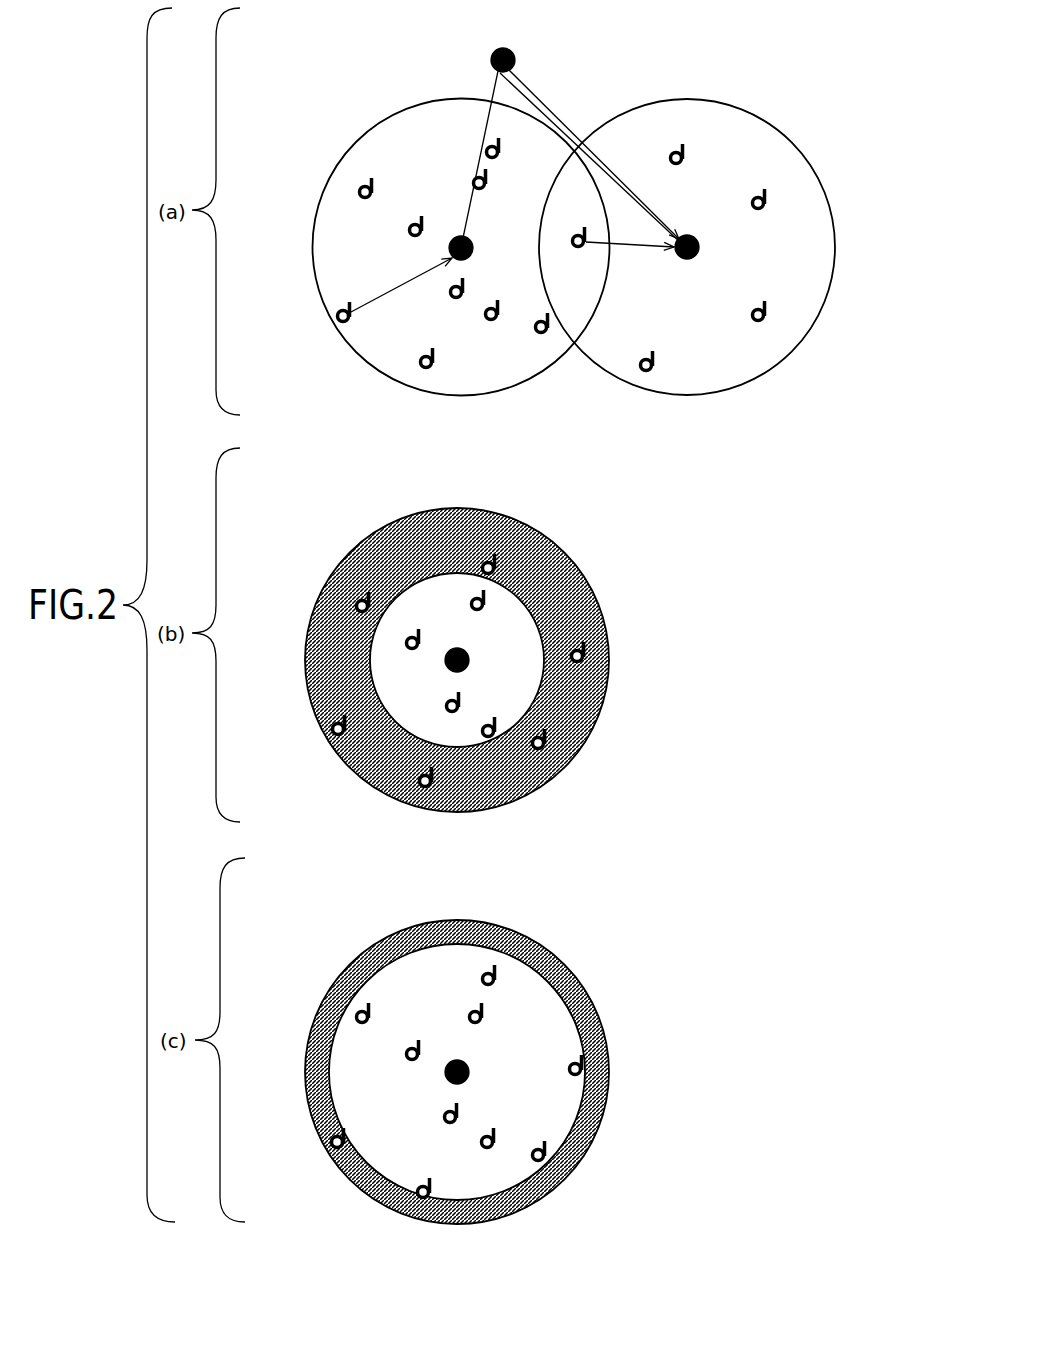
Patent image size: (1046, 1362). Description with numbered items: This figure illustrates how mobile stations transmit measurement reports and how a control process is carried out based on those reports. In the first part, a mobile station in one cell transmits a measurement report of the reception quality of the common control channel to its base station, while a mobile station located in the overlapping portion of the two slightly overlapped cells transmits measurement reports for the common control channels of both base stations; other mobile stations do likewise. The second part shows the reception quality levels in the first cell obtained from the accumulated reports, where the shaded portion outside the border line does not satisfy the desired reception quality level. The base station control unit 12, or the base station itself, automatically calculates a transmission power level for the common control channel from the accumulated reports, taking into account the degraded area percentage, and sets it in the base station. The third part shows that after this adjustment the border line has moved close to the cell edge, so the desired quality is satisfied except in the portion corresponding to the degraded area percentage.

The base station control unit 12 is at (509, 50).